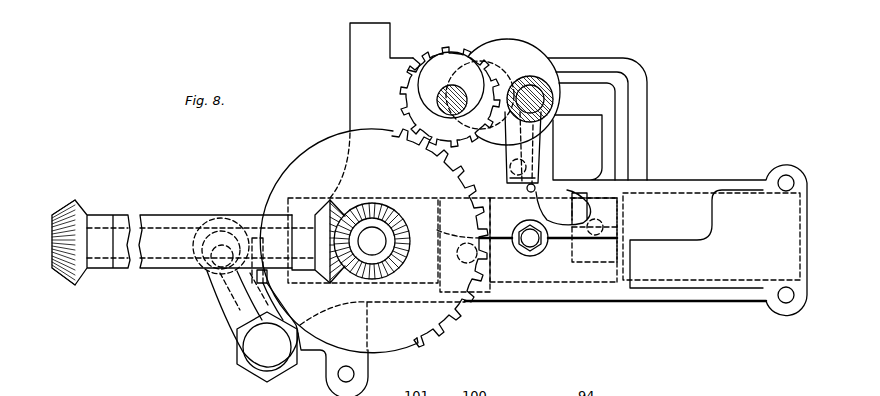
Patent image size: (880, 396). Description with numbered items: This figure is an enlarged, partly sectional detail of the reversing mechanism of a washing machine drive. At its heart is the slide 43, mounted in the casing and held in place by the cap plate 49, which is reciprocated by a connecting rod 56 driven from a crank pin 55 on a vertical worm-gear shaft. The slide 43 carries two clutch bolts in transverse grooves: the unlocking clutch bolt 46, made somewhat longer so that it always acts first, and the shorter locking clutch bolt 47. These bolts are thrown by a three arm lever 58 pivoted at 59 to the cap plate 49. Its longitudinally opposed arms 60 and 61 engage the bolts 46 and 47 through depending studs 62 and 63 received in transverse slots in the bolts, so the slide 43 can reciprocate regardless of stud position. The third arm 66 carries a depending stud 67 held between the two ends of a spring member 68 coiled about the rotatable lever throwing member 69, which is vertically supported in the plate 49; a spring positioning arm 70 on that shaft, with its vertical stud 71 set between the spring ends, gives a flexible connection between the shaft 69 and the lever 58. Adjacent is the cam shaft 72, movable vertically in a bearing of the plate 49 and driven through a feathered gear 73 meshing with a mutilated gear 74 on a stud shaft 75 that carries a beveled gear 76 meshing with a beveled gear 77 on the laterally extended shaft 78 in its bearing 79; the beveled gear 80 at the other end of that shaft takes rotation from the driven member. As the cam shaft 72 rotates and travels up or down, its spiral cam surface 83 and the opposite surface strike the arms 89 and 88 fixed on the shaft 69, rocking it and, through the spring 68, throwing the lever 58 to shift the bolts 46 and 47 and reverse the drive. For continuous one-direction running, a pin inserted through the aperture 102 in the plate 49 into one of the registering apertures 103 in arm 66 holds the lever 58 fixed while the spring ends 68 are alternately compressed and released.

The slide 43 is at (650, 282).
The unlocking clutch bolt 46 is at (448, 233).
The locking clutch bolt 47 is at (617, 207).
The cap plate 49 is at (730, 268).
The crank pin 55 is at (207, 297).
The connecting rod 56 is at (280, 238).
The three arm lever 58 is at (543, 222).
The pivot 59 is at (534, 247).
The arm 60 is at (548, 260).
The arm 61 is at (550, 243).
The depending stud 62 is at (465, 245).
The depending stud 63 is at (603, 226).
The third arm 66 is at (536, 174).
The depending stud 67 is at (510, 167).
The spring member 68 is at (532, 166).
The lever throwing member 69 is at (532, 100).
The spring positioning arm 70 is at (540, 140).
The vertical stud 71 is at (541, 145).
The cam shaft 72 is at (437, 101).
The gear 73 is at (407, 78).
The mutilated gear 74 is at (320, 152).
The stud shaft 75 is at (392, 243).
The beveled gear 76 is at (372, 203).
The beveled gear 77 is at (337, 282).
The laterally extended shaft 78 is at (163, 236).
The bearing 79 is at (157, 270).
The beveled gear 80 is at (66, 212).
The spiral cam surface 83 is at (450, 66).
The arm 88 is at (473, 127).
The arm 89 is at (514, 52).
The aperture 102 is at (535, 189).
The registering apertures 103 is at (487, 187).